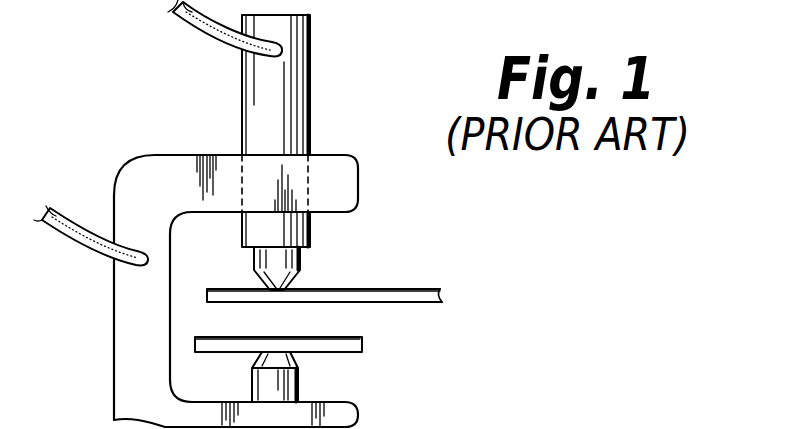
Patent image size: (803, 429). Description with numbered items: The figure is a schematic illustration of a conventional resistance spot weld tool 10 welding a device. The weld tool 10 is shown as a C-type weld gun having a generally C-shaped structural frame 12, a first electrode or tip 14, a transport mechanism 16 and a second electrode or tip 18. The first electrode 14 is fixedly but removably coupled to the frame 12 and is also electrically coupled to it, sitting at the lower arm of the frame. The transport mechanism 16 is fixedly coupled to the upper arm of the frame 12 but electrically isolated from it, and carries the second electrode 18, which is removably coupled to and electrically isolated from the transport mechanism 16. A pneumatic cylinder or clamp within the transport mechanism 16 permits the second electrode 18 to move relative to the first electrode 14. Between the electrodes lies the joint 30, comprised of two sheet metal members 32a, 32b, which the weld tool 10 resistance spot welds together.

The weld tool 10 is at (182, 98).
The structural frame 12 is at (130, 168).
The first electrode 14 is at (300, 377).
The transport mechanism 16 is at (311, 88).
The second electrode 18 is at (310, 225).
The joint 30 is at (393, 257).
The sheet metal member 32a is at (423, 287).
The sheet metal member 32b is at (362, 343).